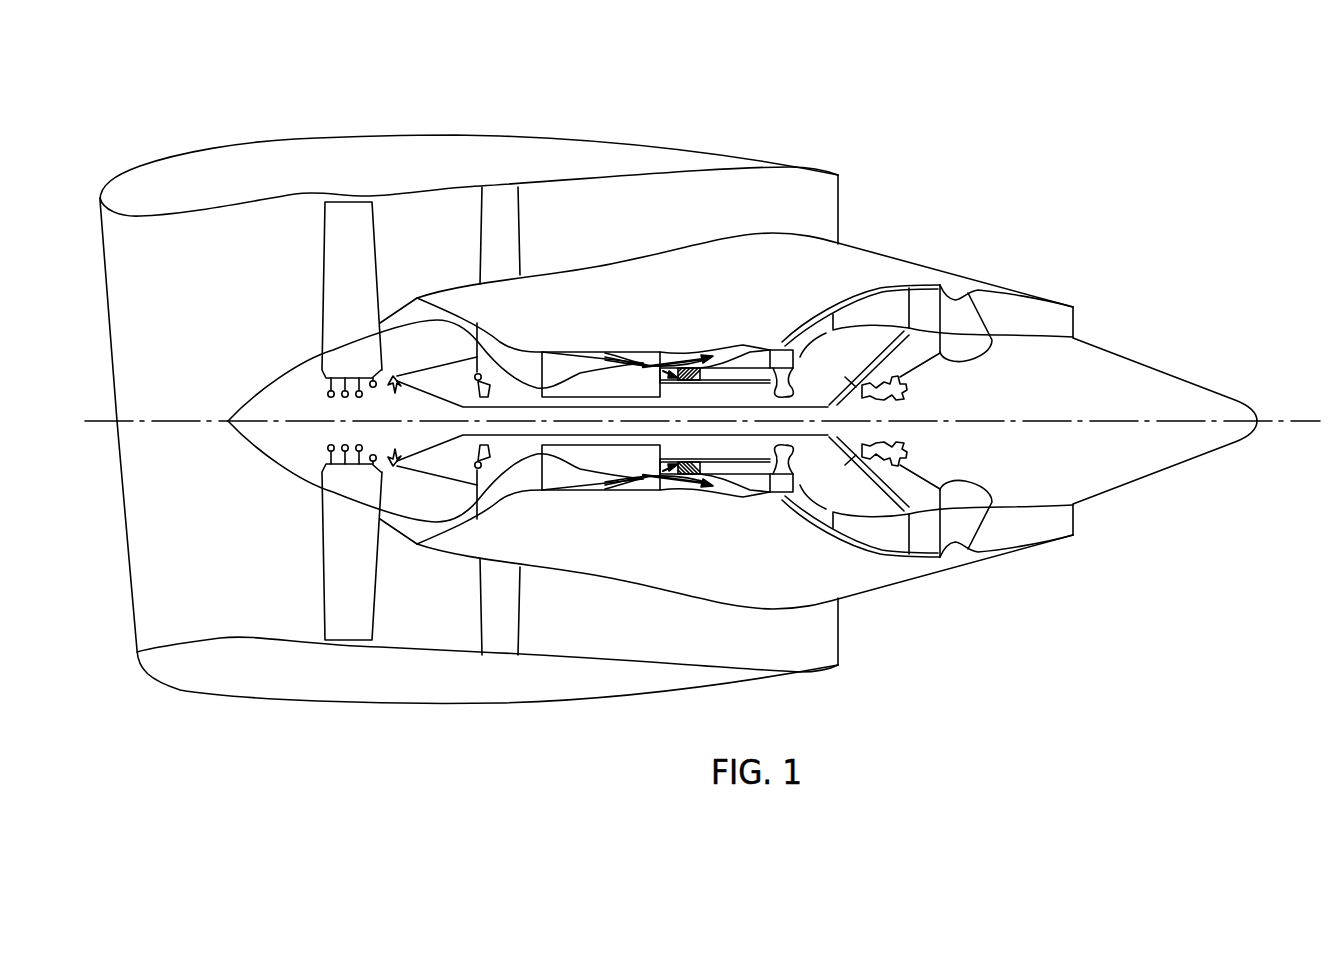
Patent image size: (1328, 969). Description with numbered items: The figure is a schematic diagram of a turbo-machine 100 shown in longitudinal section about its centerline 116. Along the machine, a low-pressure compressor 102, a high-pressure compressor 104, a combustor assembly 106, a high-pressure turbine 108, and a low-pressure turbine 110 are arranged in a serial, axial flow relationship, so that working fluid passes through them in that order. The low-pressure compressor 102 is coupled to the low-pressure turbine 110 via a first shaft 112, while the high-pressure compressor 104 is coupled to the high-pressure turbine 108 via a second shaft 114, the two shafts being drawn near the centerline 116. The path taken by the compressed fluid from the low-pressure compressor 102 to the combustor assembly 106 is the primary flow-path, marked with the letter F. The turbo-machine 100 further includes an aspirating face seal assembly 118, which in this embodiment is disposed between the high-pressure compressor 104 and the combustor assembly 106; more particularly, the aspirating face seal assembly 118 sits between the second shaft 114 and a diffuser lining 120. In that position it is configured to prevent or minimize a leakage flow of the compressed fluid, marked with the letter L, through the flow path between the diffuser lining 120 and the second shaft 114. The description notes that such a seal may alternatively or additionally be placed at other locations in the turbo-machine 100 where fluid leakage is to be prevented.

The turbo-machine 100 is at (1210, 82).
The low-pressure compressor 102 is at (440, 311).
The high-pressure compressor 104 is at (560, 358).
The combustor assembly 106 is at (734, 357).
The high-pressure turbine 108 is at (782, 488).
The low-pressure turbine 110 is at (865, 308).
The first shaft 112 is at (572, 450).
The second shaft 114 is at (765, 463).
The centerline 116 is at (1043, 418).
The aspirating face seal assembly 118 is at (688, 384).
The diffuser lining 120 is at (716, 360).